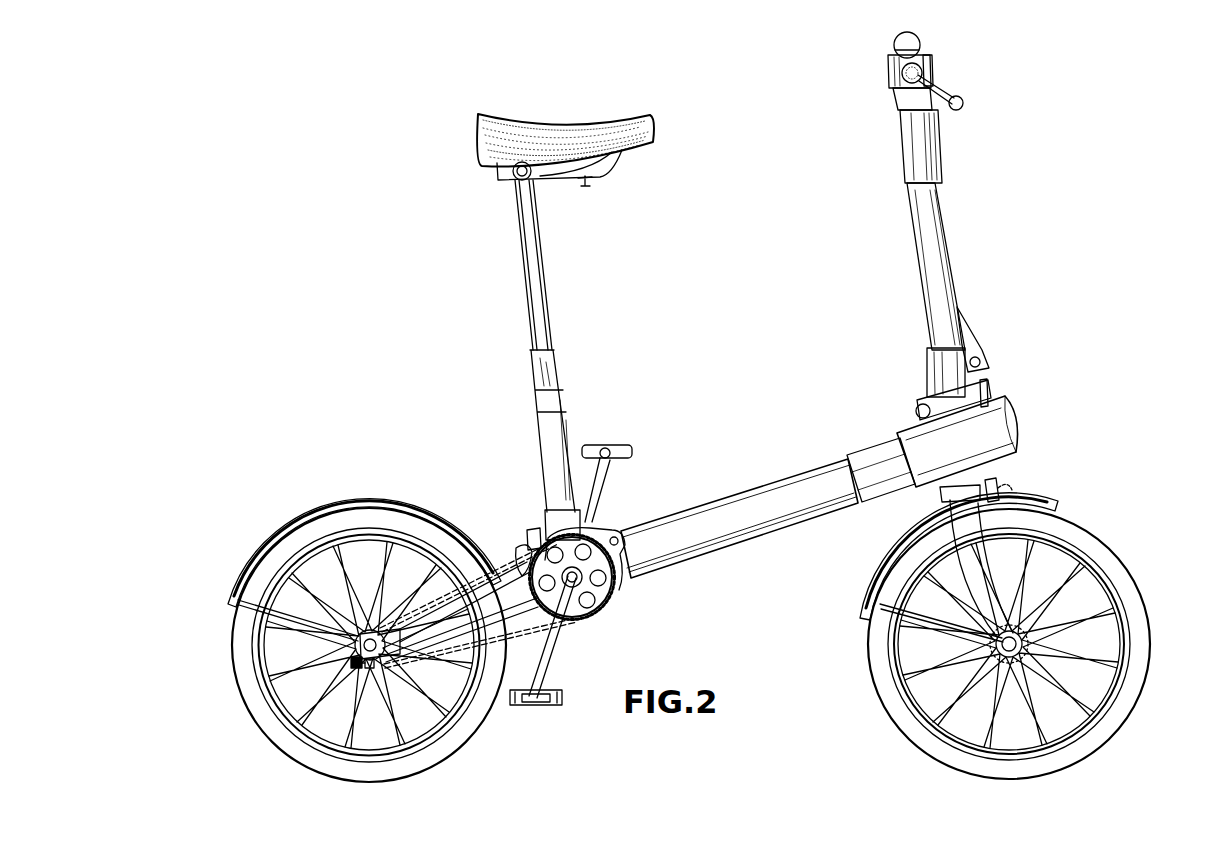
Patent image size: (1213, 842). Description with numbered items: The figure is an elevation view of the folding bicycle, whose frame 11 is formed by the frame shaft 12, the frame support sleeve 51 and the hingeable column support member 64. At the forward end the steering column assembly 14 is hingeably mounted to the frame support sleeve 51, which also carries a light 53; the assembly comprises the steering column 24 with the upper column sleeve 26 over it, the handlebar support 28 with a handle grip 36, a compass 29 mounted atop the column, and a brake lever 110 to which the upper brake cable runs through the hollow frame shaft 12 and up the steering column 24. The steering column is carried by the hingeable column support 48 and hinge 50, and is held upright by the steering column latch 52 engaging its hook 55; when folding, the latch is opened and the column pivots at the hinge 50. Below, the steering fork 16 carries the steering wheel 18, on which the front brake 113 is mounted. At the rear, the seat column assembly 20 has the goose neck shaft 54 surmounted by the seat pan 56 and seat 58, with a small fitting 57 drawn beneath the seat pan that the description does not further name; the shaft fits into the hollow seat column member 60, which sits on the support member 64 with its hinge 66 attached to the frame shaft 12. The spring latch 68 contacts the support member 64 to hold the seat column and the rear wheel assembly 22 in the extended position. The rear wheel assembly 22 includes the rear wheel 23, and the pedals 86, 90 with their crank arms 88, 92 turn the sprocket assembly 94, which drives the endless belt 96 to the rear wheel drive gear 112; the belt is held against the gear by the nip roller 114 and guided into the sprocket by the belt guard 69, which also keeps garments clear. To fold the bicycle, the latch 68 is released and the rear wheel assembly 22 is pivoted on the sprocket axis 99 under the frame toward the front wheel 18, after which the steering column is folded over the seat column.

The frame 11 is at (760, 558).
The frame shaft 12 is at (737, 507).
The steering column assembly 14 is at (896, 218).
The steering fork 16 is at (978, 592).
The steering wheel 18 is at (897, 731).
The seat column assembly 20 is at (488, 330).
The rear wheel, pedals and sprocket assembly 22 is at (248, 738).
The rear wheel 23 is at (470, 731).
The steering column 24 is at (950, 283).
The upper column sleeve 26 is at (900, 135).
The handlebar support 28 is at (888, 66).
The compass 29 is at (894, 37).
The handle grip 36 is at (900, 75).
The hingeable column support 48 is at (930, 390).
The hinge 50 is at (915, 410).
The frame support sleeve 51 is at (866, 450).
The steering column latch 52 is at (973, 346).
The light 53 is at (1019, 428).
The goose neck shaft 54 is at (541, 290).
The hook 55 is at (990, 394).
The seat pan 56 is at (612, 163).
The adjustment bolt 57 is at (588, 184).
The seat 58 is at (584, 124).
The seat column member 60 is at (560, 400).
The hingeable column support member 64 is at (548, 525).
The hinge 66 is at (622, 530).
The spring latch 68 is at (532, 535).
The belt guard 69 is at (522, 550).
The pedal 86 is at (632, 449).
The crank arm 88 is at (603, 500).
The pedal 90 is at (545, 706).
The crank arm 92 is at (566, 648).
The sprocket assembly 94 is at (590, 612).
The endless belt 96 is at (522, 630).
The sprocket axis 99 is at (588, 585).
The brake lever 110 is at (960, 98).
The rear wheel drive gear 112 is at (348, 650).
The brake 113 is at (1004, 482).
The nip roller 114 is at (366, 672).